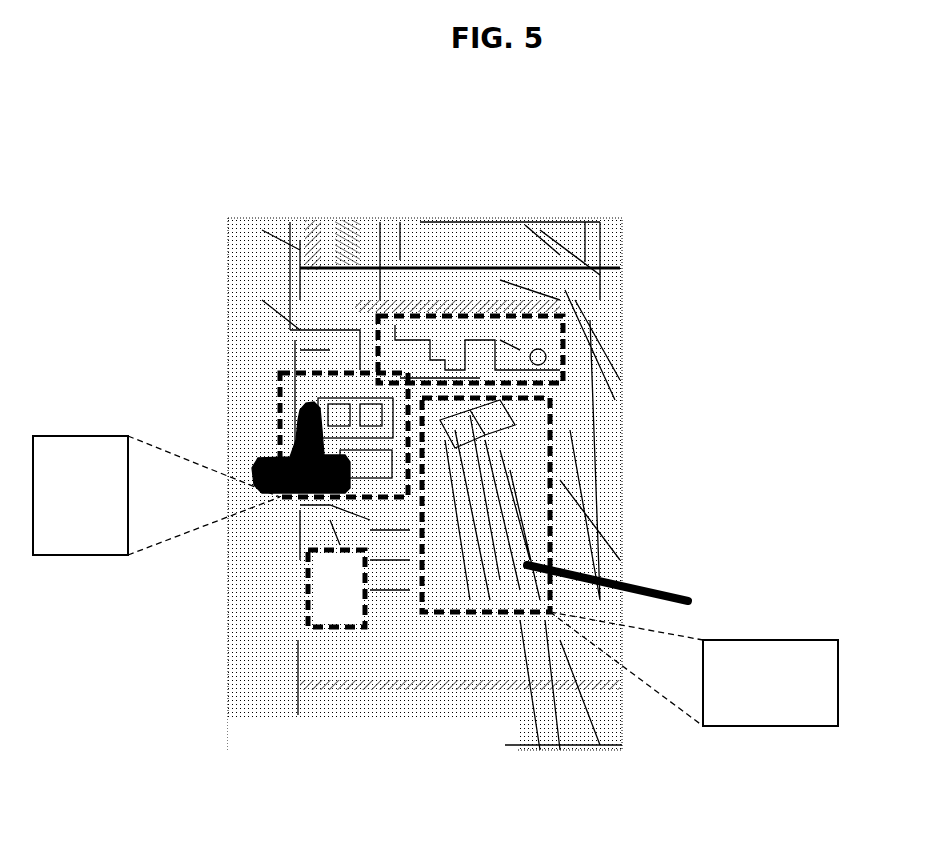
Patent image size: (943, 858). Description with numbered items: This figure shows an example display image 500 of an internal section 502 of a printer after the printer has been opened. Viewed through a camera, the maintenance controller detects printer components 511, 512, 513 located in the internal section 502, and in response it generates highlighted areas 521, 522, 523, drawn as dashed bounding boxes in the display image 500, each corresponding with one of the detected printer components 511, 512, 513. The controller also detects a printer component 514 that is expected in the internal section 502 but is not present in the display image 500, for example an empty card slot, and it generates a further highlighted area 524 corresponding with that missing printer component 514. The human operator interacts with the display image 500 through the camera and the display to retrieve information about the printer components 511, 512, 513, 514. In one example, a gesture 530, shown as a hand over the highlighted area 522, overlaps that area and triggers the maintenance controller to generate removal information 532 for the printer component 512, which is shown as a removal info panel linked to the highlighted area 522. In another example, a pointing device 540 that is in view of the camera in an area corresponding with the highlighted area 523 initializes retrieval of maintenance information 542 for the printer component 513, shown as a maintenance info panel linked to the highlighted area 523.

The display image 500 is at (315, 217).
The internal section 502 is at (379, 652).
The printer component 511 is at (547, 360).
The printer component 512 is at (326, 388).
The printer component 513 is at (497, 507).
The printer component 514 is at (325, 604).
The highlighted area 521 is at (561, 312).
The highlighted area 522 is at (278, 392).
The highlighted area 523 is at (555, 456).
The highlighted area 524 is at (300, 570).
The gesture 530 is at (268, 468).
The removal information 532 is at (156, 495).
The pointing device 540 is at (640, 585).
The maintenance information 542 is at (694, 669).